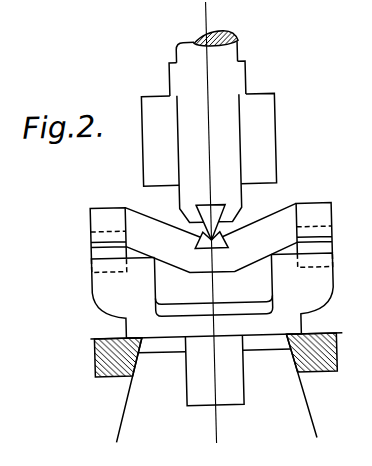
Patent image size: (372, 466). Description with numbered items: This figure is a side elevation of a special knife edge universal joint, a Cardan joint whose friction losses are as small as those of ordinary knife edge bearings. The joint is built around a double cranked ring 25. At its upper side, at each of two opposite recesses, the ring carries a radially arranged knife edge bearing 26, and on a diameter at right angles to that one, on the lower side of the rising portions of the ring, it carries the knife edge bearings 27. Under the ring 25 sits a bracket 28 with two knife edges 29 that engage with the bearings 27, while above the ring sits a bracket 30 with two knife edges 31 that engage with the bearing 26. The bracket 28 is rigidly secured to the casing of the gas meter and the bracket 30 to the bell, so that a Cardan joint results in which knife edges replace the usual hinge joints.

The double cranked ring 25 is at (267, 218).
The knife edge bearing 26 is at (221, 232).
The knife edge bearings 27 is at (91, 242).
The bracket 28 is at (307, 294).
The knife edges 29 is at (102, 254).
The bracket 30 is at (278, 117).
The knife edges 31 is at (196, 208).